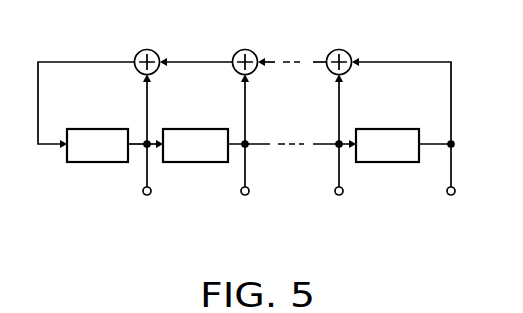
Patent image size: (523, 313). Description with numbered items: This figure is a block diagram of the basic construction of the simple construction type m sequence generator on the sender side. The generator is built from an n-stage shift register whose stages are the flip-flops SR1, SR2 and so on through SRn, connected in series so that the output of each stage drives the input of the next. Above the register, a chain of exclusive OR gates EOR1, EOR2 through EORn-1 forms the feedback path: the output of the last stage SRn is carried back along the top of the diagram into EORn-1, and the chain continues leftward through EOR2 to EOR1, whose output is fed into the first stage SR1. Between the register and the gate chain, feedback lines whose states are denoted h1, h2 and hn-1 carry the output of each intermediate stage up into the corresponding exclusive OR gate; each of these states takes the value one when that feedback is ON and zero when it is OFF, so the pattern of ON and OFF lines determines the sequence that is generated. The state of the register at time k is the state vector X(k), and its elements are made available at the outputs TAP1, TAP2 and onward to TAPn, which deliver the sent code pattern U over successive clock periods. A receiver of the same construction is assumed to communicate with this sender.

The exclusive OR gate EOR1 is at (145, 48).
The exclusive OR gate EOR2 is at (245, 48).
The exclusive OR gate EORn-1 is at (353, 48).
The flipflop SR1 is at (97, 145).
The flipflop SR2 is at (195, 145).
The flipflop SRn is at (387, 145).
The feedback line state h1 is at (136, 130).
The feedback line state h2 is at (233, 130).
The feedback line state hn-1 is at (319, 130).
The tap TAP1 is at (129, 207).
The tap TAP2 is at (243, 207).
The tap TAPn is at (453, 185).